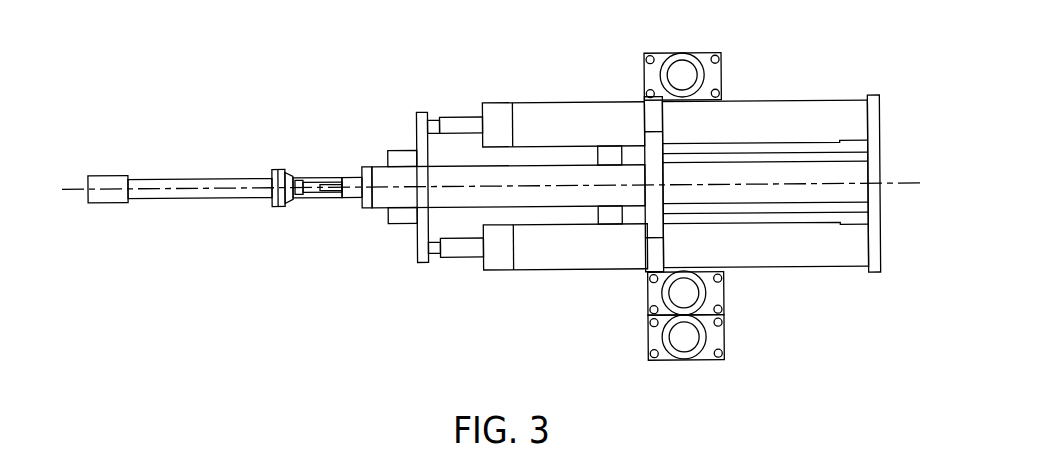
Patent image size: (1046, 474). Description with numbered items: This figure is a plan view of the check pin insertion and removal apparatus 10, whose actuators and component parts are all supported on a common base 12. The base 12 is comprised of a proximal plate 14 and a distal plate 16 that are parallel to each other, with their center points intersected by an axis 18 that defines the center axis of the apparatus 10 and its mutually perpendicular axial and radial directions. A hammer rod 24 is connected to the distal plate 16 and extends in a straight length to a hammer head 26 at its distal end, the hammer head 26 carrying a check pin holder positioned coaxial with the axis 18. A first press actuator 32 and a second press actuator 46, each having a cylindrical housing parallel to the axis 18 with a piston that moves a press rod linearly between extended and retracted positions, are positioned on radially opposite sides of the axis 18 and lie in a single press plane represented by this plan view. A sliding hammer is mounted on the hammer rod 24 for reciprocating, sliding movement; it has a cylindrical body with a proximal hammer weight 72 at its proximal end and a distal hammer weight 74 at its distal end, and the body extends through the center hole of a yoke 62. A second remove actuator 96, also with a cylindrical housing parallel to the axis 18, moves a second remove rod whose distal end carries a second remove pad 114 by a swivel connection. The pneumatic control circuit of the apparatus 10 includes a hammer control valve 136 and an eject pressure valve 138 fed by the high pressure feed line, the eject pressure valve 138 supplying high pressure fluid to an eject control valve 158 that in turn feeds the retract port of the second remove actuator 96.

The check pin insertion and removal apparatus 10 is at (565, 85).
The base 12 is at (817, 101).
The proximal plate 14 is at (873, 155).
The distal plate 16 is at (652, 116).
The axis 18 is at (72, 186).
The hammer rod 24 is at (188, 177).
The hammer head 26 is at (115, 173).
The first press actuator 32 is at (565, 248).
The second press actuator 46 is at (545, 118).
The yoke 62 is at (417, 235).
The proximal hammer weight 72 is at (612, 218).
The distal hammer weight 74 is at (400, 150).
The second remove actuator 96 is at (475, 198).
The second remove pad 114 is at (277, 206).
The hammer control valve 136 is at (723, 342).
The eject pressure valve 138 is at (723, 299).
The eject control valve 158 is at (712, 74).